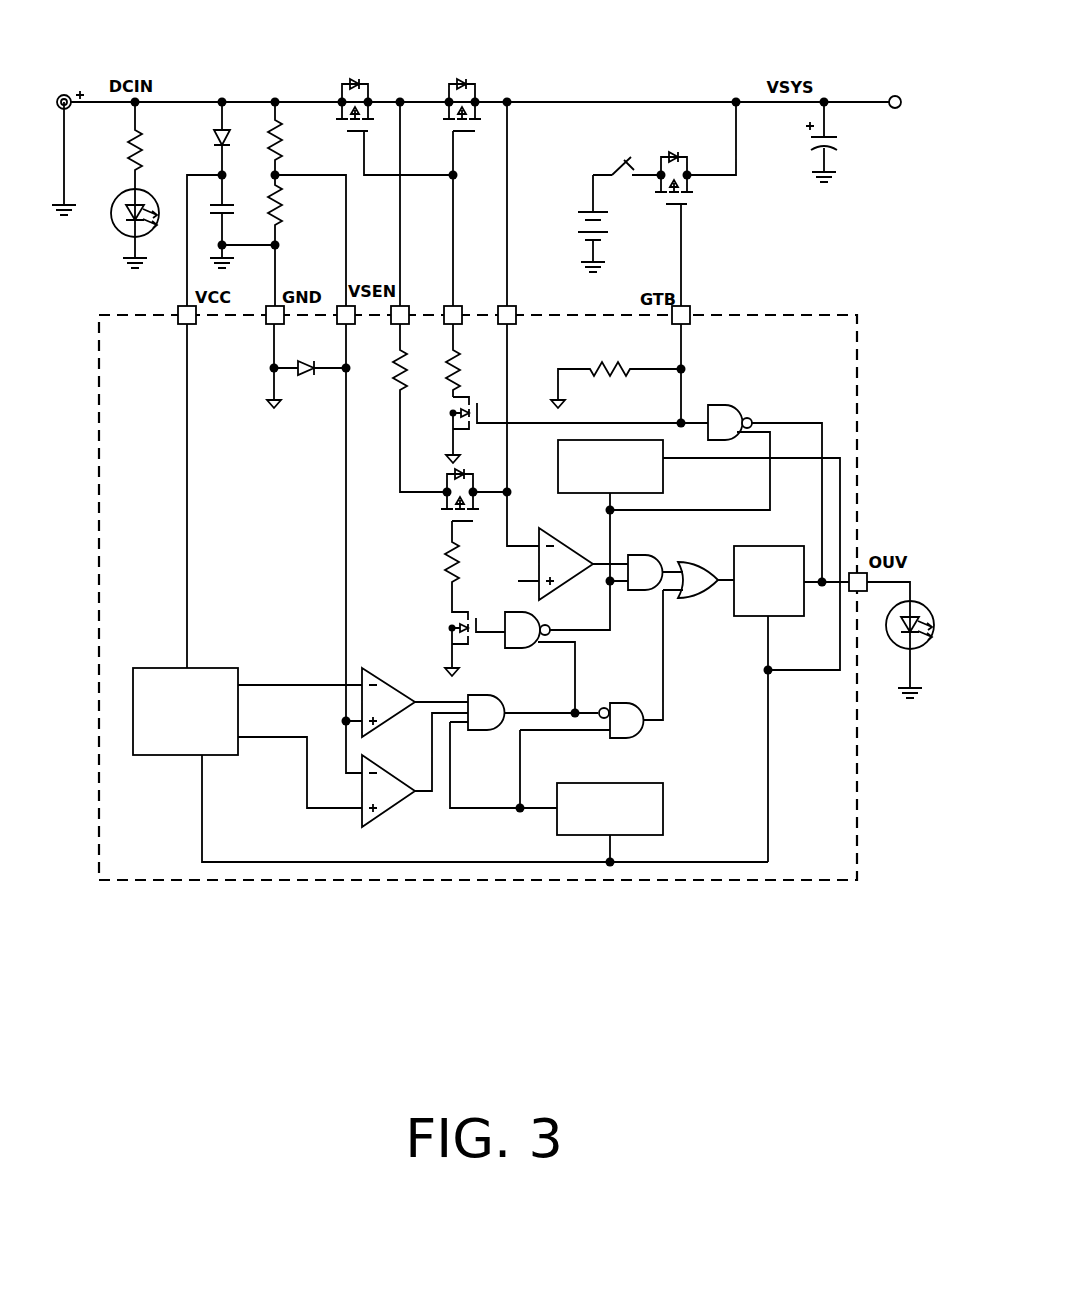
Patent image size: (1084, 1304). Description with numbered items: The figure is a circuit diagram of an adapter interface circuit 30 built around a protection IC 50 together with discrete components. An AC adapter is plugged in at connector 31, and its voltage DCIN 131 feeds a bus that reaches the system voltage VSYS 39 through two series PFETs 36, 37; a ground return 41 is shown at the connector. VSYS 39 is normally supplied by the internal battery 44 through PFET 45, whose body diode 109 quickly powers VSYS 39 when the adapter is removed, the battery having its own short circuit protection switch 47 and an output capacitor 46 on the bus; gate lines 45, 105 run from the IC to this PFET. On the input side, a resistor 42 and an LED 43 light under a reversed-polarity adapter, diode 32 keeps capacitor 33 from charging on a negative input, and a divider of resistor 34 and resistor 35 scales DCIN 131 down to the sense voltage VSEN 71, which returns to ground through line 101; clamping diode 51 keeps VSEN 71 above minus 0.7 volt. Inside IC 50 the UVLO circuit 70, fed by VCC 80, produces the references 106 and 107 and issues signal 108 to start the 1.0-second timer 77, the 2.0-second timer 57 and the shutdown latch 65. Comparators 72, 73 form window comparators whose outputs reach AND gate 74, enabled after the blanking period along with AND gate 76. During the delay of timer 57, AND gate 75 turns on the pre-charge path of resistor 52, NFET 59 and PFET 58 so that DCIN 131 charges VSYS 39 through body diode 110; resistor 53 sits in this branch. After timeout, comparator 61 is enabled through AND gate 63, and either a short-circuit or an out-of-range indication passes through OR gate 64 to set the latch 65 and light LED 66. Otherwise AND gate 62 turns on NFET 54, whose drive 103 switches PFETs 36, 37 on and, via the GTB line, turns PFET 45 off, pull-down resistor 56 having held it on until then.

The circuit 30 is at (272, 903).
The connector 31 is at (70, 95).
The DCIN voltage 131 is at (190, 100).
The diode 32 is at (226, 142).
The capacitor 33 is at (236, 205).
The resistor 34 is at (283, 140).
The resistor 35 is at (285, 206).
The PFET 36 is at (382, 122).
The PFET 37 is at (460, 82).
The system voltage VSYS 39 is at (892, 95).
The ground return line 41 is at (66, 176).
The resistor 42 is at (148, 155).
The LED 43 is at (118, 234).
The internal battery 44 is at (583, 220).
The PFET 45 is at (696, 196).
The output capacitor 46 is at (838, 148).
The short circuit protection switch 47 is at (612, 166).
The protection IC 50 is at (164, 841).
The clamping diode 51 is at (306, 377).
The resistor 52 is at (392, 378).
The resistor 53 is at (460, 368).
The NFET 54 is at (458, 404).
The pull-down resistor 56 is at (620, 366).
The 2.0-second timer 57 is at (557, 472).
The PFET 58 is at (447, 519).
The NFET 59 is at (448, 614).
The comparator 61 is at (553, 536).
The AND gate 62 is at (743, 405).
The AND gate 63 is at (632, 553).
The OR gate 64 is at (687, 562).
The shutdown latch 65 is at (770, 546).
The LED 66 is at (922, 603).
The UVLO circuit 70 is at (208, 668).
The sense voltage VSEN 71 is at (347, 595).
The comparator 72 is at (378, 672).
The comparator 73 is at (378, 758).
The AND gate 74 is at (478, 692).
The AND gate 75 is at (545, 613).
The AND gate 76 is at (614, 702).
The 1.0-second timer 77 is at (610, 782).
The VCC 80 is at (188, 520).
The ground connection line 101 is at (277, 273).
The gate drive line 103 is at (455, 265).
The GTB gate drive line 105 is at (684, 248).
The reference voltage V 106 is at (337, 684).
The reference voltage V 107 is at (305, 775).
The signal 108 is at (770, 704).
The body diode 109 is at (672, 153).
The body diode 110 is at (362, 82).